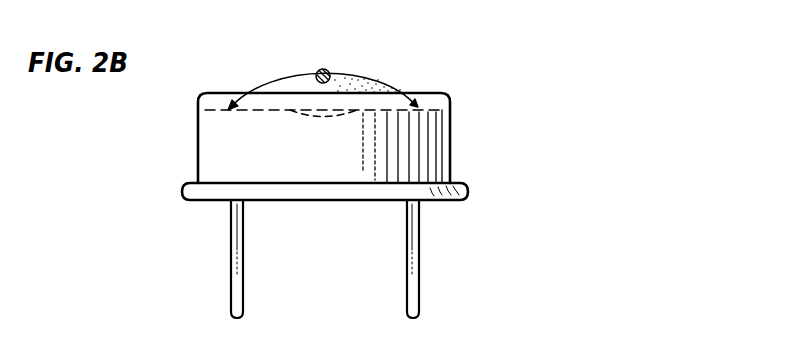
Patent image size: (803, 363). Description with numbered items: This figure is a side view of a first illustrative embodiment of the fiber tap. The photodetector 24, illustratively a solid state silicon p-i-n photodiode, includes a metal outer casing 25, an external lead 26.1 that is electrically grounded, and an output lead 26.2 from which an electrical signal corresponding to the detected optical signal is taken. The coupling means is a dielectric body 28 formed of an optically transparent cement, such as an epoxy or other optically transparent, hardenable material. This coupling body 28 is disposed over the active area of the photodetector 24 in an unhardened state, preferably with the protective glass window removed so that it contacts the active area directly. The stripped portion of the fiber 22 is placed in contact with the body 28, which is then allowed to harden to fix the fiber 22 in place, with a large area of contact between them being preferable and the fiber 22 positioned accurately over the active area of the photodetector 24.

The fiber 22 is at (324, 69).
The photodetector 24 is at (450, 133).
The metal outer casing 25 is at (210, 154).
The external lead 26.1 is at (232, 303).
The output lead 26.2 is at (418, 298).
The dielectric body 28 is at (370, 80).